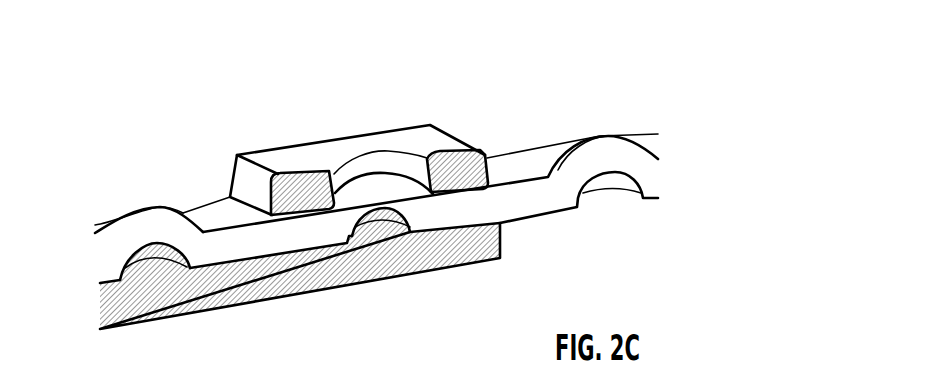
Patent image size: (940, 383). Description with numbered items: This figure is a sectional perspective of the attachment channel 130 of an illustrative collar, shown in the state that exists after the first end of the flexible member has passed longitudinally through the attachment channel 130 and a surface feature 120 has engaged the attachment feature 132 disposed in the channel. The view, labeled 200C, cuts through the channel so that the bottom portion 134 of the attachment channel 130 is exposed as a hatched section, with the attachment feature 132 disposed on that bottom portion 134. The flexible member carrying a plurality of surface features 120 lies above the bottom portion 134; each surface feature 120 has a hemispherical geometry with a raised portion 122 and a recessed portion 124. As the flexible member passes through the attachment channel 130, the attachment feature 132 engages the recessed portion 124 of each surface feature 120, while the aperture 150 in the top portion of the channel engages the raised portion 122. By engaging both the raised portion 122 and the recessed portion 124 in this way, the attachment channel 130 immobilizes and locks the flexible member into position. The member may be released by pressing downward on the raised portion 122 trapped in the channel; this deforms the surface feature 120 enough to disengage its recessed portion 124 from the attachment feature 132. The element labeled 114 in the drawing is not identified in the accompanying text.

The base substrate 114 is at (500, 258).
The surface feature 120 is at (132, 242).
The raised portion 122 is at (131, 209).
The recessed portion 124 is at (158, 243).
The attachment channel 130 is at (457, 131).
The attachment feature 132 is at (391, 227).
The bottom portion 134 is at (466, 247).
The aperture 150 is at (405, 153).
The assembly 200C is at (838, 66).